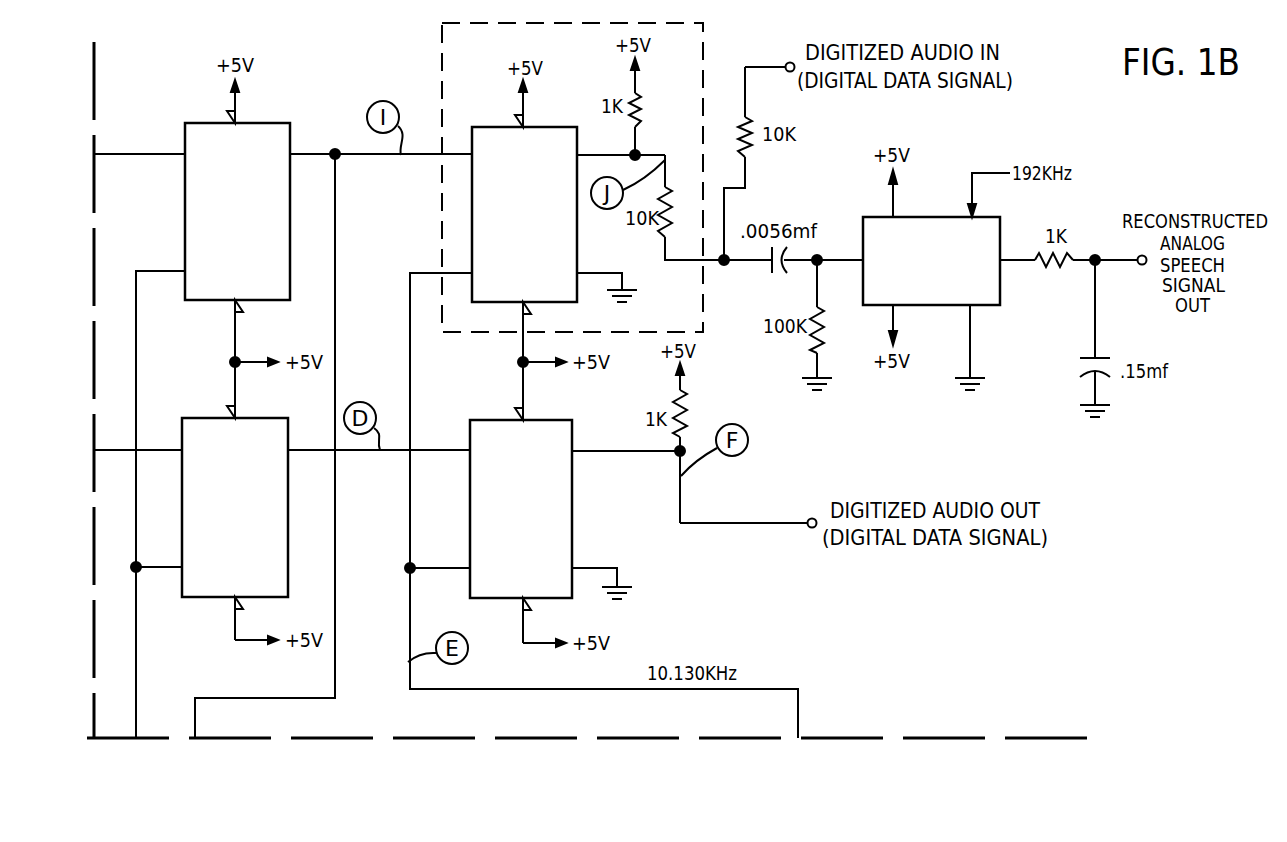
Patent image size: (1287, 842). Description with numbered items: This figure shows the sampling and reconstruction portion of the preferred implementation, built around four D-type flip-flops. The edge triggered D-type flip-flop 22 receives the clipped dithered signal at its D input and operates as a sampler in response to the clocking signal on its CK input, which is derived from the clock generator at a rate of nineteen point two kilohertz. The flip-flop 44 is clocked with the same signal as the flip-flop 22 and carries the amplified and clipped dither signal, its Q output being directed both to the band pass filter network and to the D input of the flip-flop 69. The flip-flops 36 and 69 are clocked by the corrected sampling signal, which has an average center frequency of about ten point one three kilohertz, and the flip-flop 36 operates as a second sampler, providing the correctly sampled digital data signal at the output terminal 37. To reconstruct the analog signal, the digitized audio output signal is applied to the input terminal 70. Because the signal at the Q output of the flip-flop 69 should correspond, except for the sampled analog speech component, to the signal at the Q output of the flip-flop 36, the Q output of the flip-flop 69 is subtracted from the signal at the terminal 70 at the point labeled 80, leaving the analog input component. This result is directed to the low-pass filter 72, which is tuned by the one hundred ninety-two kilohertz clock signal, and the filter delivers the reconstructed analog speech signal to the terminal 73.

The flip-flop 44 is at (277, 132).
The edge triggered D-type flip-flop 22 is at (203, 425).
The D-type flip-flop 69 is at (491, 118).
The D-type flip-flop 36 is at (490, 428).
The input terminal 70 is at (787, 62).
The subtraction point 80 is at (724, 265).
The low-pass filter 72 is at (987, 305).
The terminal 73 is at (1145, 267).
The output terminal 37 is at (808, 530).